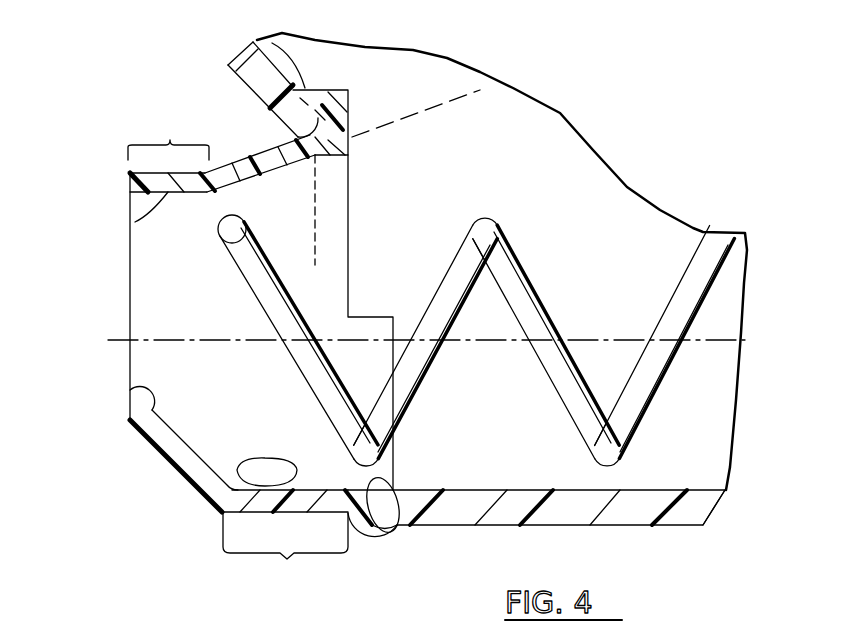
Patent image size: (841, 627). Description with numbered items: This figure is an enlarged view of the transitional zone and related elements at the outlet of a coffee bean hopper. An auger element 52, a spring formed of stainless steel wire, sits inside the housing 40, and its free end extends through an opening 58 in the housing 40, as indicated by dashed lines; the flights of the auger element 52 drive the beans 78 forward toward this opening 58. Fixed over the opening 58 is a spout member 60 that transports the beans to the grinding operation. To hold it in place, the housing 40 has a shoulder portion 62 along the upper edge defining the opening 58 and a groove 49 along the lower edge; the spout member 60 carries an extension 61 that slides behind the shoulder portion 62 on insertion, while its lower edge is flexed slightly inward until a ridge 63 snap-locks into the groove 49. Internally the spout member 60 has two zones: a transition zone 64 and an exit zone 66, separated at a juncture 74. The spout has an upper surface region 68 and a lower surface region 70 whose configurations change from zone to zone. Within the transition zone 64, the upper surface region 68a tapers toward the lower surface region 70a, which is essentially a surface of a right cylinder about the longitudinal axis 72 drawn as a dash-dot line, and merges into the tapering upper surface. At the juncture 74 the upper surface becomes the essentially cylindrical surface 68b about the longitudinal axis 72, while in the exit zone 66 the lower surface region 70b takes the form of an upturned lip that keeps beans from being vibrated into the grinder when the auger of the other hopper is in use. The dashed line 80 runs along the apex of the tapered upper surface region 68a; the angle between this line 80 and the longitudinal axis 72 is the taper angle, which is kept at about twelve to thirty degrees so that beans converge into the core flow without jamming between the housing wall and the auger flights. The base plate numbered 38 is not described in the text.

The base 38 is at (650, 490).
The housing 40 is at (580, 517).
The groove 49 is at (397, 533).
The auger element 52 is at (477, 217).
The opening 58 is at (362, 515).
The spout member 60 is at (150, 449).
The extension 61 is at (258, 40).
The shoulder portion 62 is at (348, 127).
The ridge 63 is at (397, 532).
The transition zone 64 is at (285, 553).
The exit zone 66 is at (170, 140).
The upper surface region 68 is at (147, 197).
The tapered upper surface region 68a is at (237, 178).
The cylindrical upper surface region 68b is at (135, 222).
The lower surface region 70 is at (180, 438).
The cylindrical lower surface region 70a is at (307, 488).
The upturned lip 70b is at (131, 386).
The longitudinal axis 72 is at (113, 340).
The juncture 74 is at (220, 509).
The beans 78 is at (247, 458).
The apex line 80 is at (480, 90).